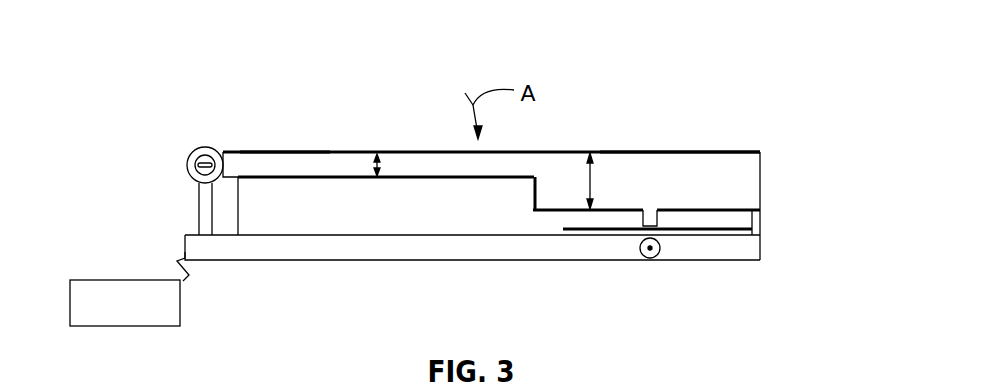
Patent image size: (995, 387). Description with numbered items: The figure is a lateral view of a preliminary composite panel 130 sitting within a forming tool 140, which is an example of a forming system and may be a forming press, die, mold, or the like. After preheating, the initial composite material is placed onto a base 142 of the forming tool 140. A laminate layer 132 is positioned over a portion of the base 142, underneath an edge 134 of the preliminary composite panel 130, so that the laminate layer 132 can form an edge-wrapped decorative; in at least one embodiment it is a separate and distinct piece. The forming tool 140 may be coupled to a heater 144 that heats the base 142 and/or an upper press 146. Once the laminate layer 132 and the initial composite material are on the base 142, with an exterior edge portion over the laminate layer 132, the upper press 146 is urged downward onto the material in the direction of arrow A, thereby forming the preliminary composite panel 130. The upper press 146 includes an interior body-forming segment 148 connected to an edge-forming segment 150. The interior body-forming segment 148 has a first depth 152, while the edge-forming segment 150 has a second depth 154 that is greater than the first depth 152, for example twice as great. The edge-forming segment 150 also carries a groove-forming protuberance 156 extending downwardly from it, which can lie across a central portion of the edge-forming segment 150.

The preliminary composite panel 130 is at (292, 207).
The laminate layer 132 is at (586, 232).
The edge 134 is at (737, 223).
The forming tool 140 is at (237, 147).
The base 142 is at (430, 247).
The heater 144 is at (126, 328).
The upper press 146 is at (313, 152).
The interior body-forming segment 148 is at (280, 150).
The edge-forming segment 150 is at (653, 152).
The first depth 152 is at (380, 166).
The second depth 154 is at (592, 178).
The groove-forming protuberance 156 is at (651, 213).